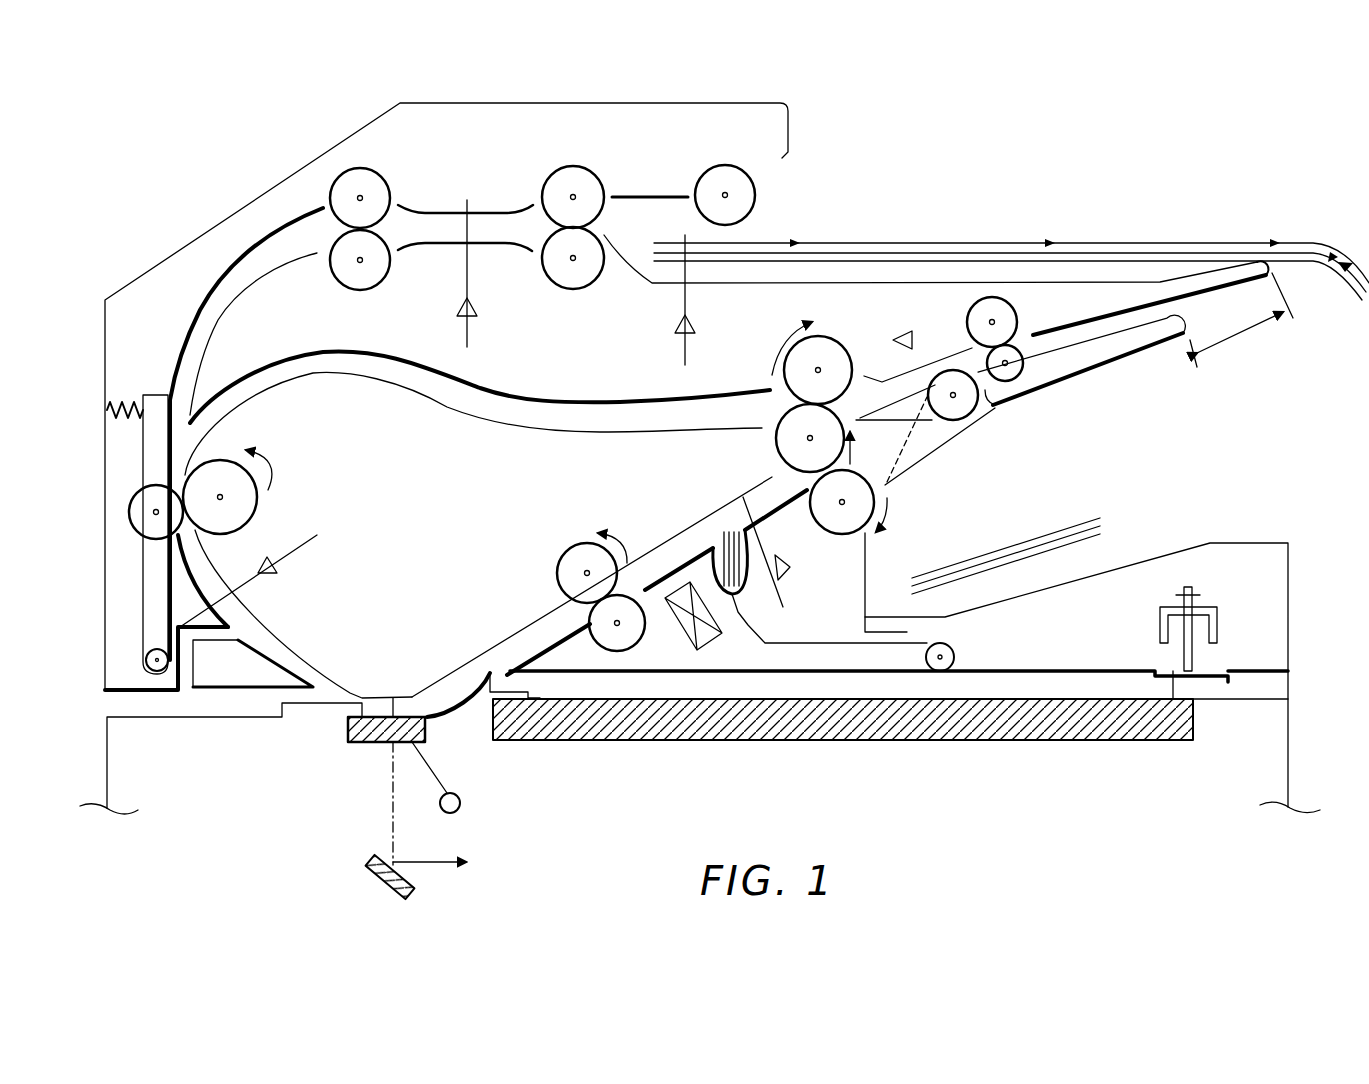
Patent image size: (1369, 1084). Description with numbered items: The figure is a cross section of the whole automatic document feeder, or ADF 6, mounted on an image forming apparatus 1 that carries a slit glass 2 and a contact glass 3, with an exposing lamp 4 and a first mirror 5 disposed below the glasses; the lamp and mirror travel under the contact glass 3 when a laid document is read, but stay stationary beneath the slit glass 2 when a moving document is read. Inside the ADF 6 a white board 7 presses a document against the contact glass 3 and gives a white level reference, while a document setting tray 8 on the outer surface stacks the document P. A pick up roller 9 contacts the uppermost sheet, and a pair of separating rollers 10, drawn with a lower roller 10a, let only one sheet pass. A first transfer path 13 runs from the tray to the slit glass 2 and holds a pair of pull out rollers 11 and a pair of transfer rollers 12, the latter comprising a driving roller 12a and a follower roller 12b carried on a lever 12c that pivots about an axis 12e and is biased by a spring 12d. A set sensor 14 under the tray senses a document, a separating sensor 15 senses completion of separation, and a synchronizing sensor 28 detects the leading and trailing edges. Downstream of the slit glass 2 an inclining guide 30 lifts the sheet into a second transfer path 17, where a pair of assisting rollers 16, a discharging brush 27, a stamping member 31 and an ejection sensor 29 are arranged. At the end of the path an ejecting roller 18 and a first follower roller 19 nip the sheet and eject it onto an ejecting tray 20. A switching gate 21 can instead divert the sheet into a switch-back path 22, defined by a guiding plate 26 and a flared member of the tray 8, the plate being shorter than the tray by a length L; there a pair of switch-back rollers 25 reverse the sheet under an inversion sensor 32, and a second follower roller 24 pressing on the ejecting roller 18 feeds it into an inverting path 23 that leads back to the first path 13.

The image forming apparatus 1 is at (107, 778).
The slit glass 2 is at (347, 728).
The contact glass 3 is at (1090, 743).
The exposing lamp 4 is at (462, 810).
The first mirror 5 is at (374, 882).
The ADF 6 is at (138, 276).
The white board 7 is at (1118, 681).
The document setting tray 8 is at (1085, 281).
The pick up roller 9 is at (724, 165).
The separating rollers 10 is at (570, 165).
The counter roller 10a is at (575, 290).
The pull out rollers 11 is at (352, 168).
The transfer rollers 12 is at (276, 462).
The driving roller 12a is at (256, 511).
The follower roller 12b is at (130, 512).
The lever 12c is at (143, 628).
The spring 12d is at (110, 407).
The axis 12e is at (150, 660).
The first transfer path 13 is at (262, 624).
The set sensor 14 is at (675, 327).
The separating sensor 15 is at (457, 311).
The assisting rollers 16 is at (600, 643).
The second transfer path 17 is at (530, 632).
The ejecting roller 18 is at (777, 460).
The first follower roller 19 is at (837, 537).
The ejecting tray 20 is at (1182, 541).
The switching gate 21 is at (880, 420).
The switch-back path 22 is at (1123, 315).
The inverting path 23 is at (372, 380).
The second follower roller 24 is at (840, 356).
The switch-back rollers 25 is at (1018, 320).
The guiding plate 26 is at (1070, 386).
The discharging brush 27 is at (738, 612).
The synchronizing sensor 28 is at (278, 571).
The ejection sensor 29 is at (783, 607).
The inclining guide 30 is at (458, 725).
The stamping member 31 is at (690, 645).
The inversion sensor 32 is at (915, 337).
The document P is at (883, 241).
The length L is at (1240, 333).